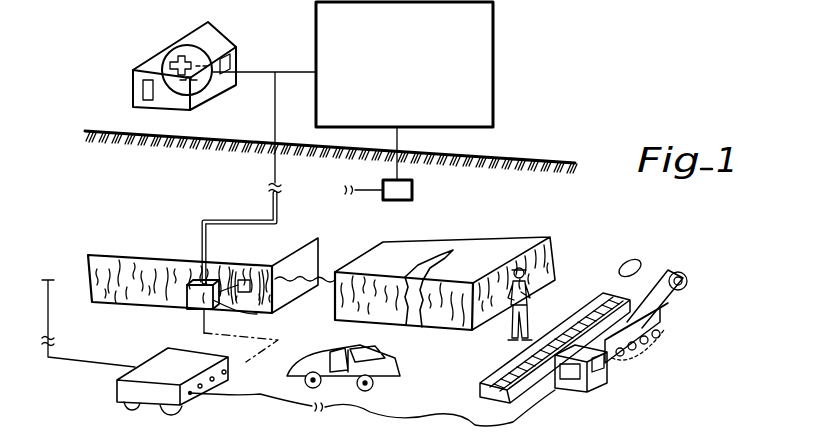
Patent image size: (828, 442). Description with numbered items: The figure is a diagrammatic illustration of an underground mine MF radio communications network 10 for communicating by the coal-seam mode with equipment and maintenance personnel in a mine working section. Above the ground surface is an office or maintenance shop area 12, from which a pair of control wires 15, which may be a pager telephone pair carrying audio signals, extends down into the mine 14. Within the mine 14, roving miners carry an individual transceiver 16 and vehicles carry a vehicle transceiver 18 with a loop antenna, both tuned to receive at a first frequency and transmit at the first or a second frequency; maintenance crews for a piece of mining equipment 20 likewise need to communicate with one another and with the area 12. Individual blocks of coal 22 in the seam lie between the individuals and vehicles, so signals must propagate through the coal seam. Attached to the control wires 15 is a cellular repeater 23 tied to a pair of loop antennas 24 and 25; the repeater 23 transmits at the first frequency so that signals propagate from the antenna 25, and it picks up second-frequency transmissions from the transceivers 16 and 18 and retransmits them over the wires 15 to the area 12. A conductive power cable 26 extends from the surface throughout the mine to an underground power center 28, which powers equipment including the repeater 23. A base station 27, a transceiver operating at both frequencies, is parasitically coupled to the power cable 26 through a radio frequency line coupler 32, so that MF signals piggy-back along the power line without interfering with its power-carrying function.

The radio communications network 10 is at (523, 108).
The office or maintenance shop area 12 is at (165, 52).
The mine 14 is at (504, 222).
The control wires 15 is at (257, 69).
The individual transceiver 16 is at (531, 268).
The vehicle transceiver 18 is at (395, 357).
The mining equipment 20 is at (634, 338).
The blocks of coal 22 is at (148, 256).
The cellular repeater 23 is at (191, 309).
The loop antenna 24 is at (239, 280).
The loop antenna 25 is at (257, 313).
The conductive power cable 26 is at (363, 192).
The base station 27 is at (493, 42).
The underground power center 28 is at (119, 378).
The radio frequency line coupler 32 is at (412, 190).